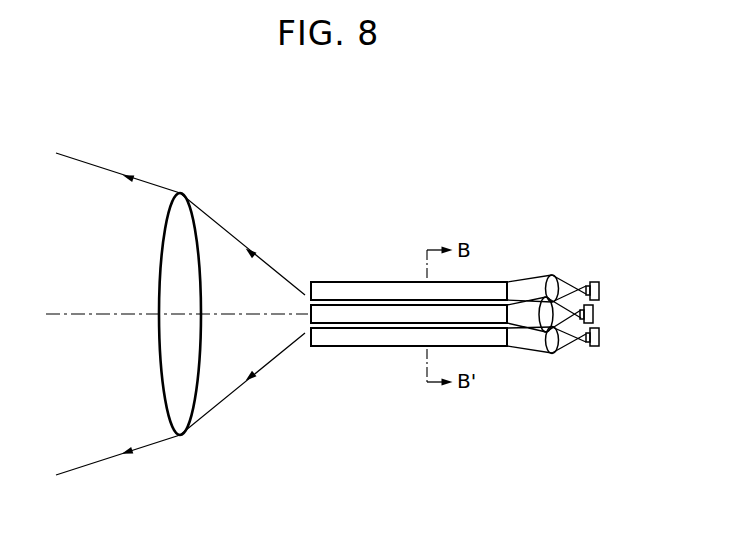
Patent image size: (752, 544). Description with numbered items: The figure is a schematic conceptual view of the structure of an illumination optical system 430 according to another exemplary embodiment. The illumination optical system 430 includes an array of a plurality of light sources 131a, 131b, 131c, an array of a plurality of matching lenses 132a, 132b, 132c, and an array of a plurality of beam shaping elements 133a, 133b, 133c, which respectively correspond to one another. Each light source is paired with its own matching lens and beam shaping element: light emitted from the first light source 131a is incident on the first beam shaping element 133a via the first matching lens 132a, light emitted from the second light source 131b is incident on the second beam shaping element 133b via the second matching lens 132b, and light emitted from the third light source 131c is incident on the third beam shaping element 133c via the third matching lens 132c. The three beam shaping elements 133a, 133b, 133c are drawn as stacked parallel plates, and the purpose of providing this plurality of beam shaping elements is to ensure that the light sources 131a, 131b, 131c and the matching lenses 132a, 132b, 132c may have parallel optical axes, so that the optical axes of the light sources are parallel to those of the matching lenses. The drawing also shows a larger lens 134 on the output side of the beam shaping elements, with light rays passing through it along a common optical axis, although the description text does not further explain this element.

The projection lens 134 is at (180, 191).
The illumination optical system 430 is at (500, 165).
The first beam shaping element 133a is at (329, 289).
The second beam shaping element 133b is at (379, 310).
The third beam shaping element 133c is at (360, 340).
The first matching lens 132a is at (552, 275).
The second matching lens 132b is at (544, 298).
The third matching lens 132c is at (552, 353).
The first light source 131a is at (596, 281).
The second light source 131b is at (594, 314).
The third light source 131c is at (596, 347).